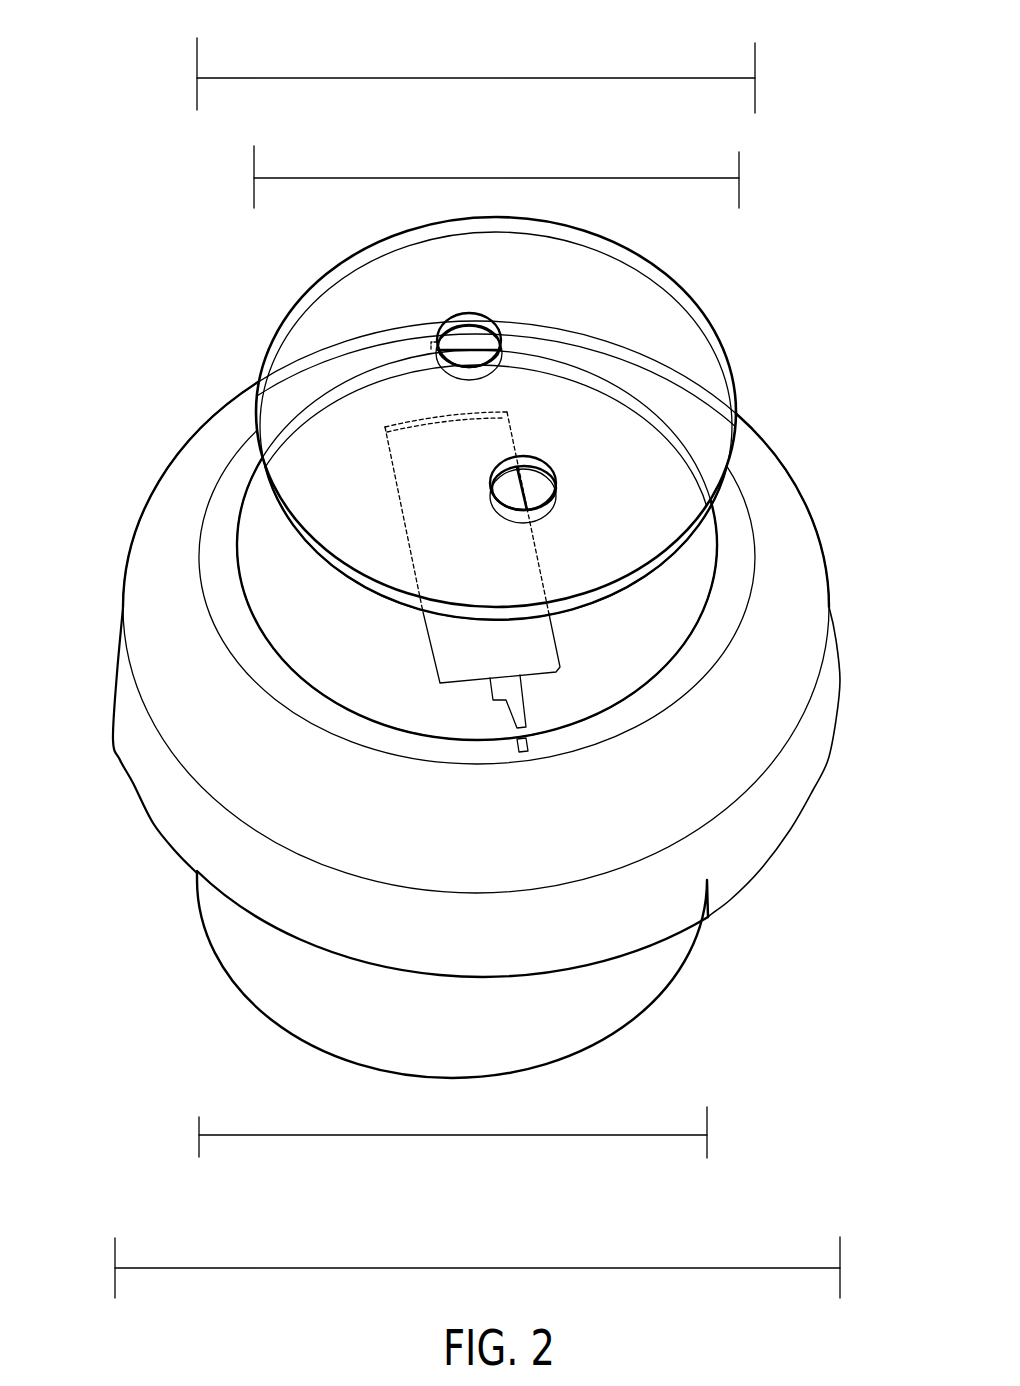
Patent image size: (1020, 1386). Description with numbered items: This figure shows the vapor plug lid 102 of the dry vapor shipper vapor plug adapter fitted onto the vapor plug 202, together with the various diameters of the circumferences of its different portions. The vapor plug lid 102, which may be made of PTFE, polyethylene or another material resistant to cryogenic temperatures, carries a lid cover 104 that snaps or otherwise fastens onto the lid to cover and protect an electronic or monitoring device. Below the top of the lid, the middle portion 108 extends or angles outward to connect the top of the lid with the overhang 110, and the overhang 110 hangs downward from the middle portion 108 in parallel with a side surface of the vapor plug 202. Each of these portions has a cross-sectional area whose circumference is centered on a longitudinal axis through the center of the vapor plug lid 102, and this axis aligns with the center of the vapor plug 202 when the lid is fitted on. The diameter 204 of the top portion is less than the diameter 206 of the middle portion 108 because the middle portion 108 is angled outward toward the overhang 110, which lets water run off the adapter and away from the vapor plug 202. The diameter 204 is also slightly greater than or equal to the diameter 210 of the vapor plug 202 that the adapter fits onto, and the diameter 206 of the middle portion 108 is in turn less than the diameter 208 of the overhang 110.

The vapor plug lid 102 is at (114, 521).
The lid cover 104 is at (337, 537).
The middle portion 108 is at (798, 518).
The overhang 110 is at (835, 688).
The vapor plug 202 is at (620, 1007).
The diameter of the top portion 204 is at (495, 177).
The diameter of the middle portion 206 is at (343, 77).
The diameter of the overhang 208 is at (447, 1267).
The diameter of the vapor plug 210 is at (282, 1135).